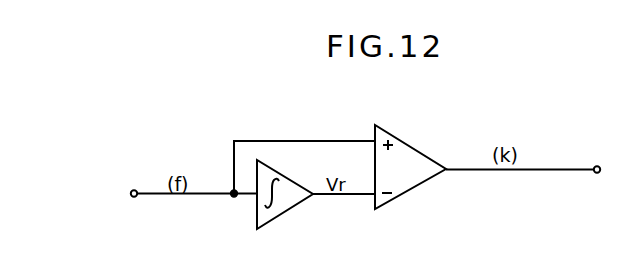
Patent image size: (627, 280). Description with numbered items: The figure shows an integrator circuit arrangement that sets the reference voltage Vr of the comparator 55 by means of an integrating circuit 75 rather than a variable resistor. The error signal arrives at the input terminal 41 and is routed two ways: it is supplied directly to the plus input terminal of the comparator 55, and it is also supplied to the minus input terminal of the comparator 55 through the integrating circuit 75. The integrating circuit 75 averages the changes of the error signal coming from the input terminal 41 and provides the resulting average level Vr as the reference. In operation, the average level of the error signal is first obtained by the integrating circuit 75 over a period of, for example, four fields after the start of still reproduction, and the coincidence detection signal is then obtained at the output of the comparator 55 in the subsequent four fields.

The input terminal 41 is at (134, 189).
The integrating circuit 75 is at (285, 215).
The comparator 55 is at (422, 147).